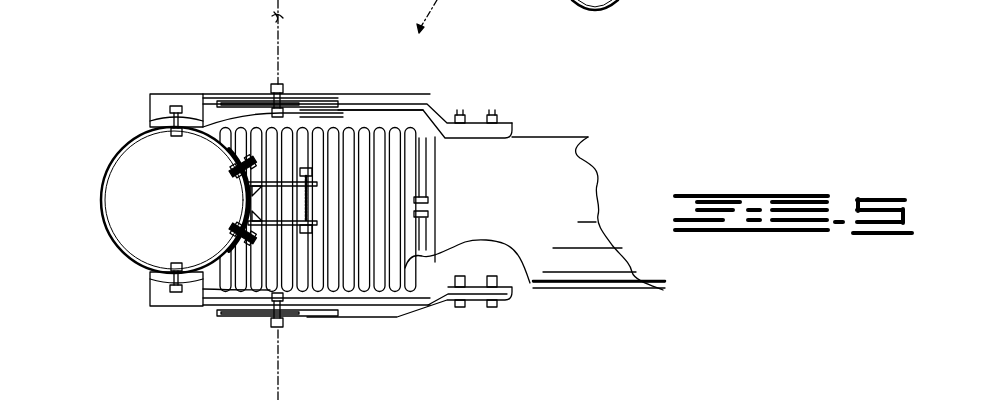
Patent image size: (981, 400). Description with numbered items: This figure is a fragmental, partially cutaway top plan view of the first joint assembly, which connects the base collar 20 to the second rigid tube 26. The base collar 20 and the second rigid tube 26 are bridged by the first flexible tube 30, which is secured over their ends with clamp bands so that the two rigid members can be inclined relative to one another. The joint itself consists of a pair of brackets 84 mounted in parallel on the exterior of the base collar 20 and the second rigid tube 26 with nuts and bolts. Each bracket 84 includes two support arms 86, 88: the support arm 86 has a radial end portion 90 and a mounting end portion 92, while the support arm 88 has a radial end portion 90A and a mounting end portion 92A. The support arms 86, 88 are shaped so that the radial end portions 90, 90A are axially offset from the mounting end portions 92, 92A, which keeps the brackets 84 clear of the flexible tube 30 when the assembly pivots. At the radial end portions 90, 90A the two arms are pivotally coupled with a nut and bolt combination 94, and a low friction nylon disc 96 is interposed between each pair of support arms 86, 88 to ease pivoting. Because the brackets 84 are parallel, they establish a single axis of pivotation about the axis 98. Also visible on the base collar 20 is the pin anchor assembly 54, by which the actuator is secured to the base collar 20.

The base collar 20 is at (103, 220).
The second rigid tube 26 is at (605, 290).
The first flexible tube 30 is at (385, 147).
The pin anchor assembly 54 is at (246, 197).
The bracket 84 is at (321, 95).
The support arm 86 is at (210, 94).
The support arm 88 is at (378, 104).
The radial end portion 90 is at (257, 95).
The radial end portion 90A is at (207, 118).
The mounting end portion 92 is at (150, 126).
The mounting end portion 92A is at (511, 126).
The nut and bolt combination 94 is at (343, 113).
The nylon disc 96 is at (290, 100).
The axis 98 is at (282, 17).